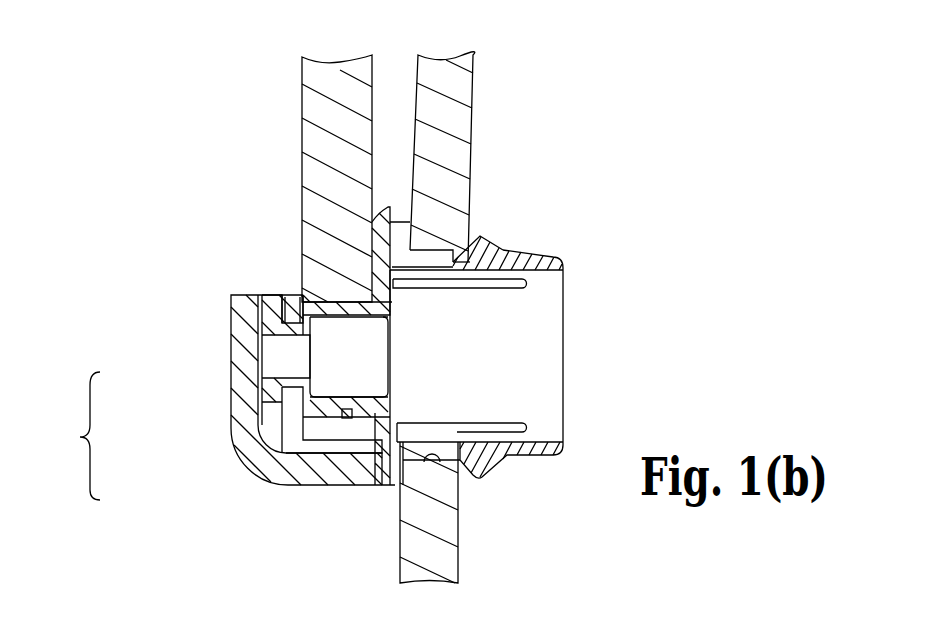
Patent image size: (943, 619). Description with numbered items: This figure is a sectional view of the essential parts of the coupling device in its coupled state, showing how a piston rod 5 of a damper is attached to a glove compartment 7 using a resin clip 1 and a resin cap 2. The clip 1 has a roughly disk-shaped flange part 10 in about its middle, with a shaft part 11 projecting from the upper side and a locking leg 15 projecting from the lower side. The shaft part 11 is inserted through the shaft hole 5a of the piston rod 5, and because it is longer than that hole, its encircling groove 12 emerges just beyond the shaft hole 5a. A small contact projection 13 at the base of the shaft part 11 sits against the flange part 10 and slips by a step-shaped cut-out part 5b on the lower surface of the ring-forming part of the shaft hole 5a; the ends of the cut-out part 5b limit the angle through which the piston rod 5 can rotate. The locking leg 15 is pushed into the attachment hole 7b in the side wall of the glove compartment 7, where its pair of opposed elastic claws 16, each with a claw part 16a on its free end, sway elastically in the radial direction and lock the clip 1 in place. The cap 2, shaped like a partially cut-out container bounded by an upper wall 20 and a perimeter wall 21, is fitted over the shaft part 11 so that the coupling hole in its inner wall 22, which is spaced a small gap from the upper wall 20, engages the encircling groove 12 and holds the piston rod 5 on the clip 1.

The clip 1 is at (578, 350).
The cap 2 is at (74, 436).
The piston rod 5 is at (312, 104).
The shaft hole 5a is at (330, 300).
The cut-out part 5b is at (320, 484).
The glove compartment 7 is at (473, 83).
The attachment hole 7b is at (457, 498).
The flange part 10 is at (384, 486).
The shaft part 11 is at (260, 296).
The encircling groove 12 is at (266, 298).
The contact projection 13 is at (348, 418).
The locking leg 15 is at (555, 261).
The elastic claw 16 is at (502, 249).
The claw part 16a is at (479, 234).
The upper wall 20 is at (258, 430).
The perimeter wall 21 is at (290, 484).
The inner wall 22 is at (282, 414).